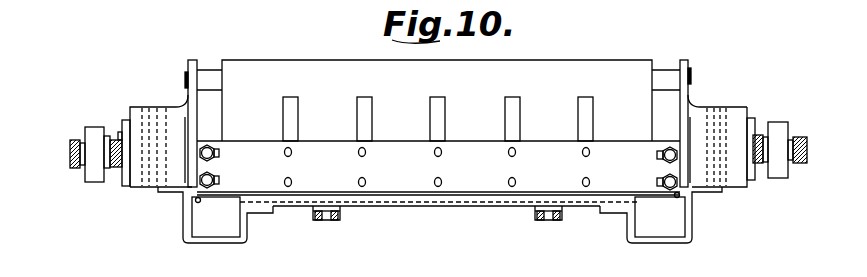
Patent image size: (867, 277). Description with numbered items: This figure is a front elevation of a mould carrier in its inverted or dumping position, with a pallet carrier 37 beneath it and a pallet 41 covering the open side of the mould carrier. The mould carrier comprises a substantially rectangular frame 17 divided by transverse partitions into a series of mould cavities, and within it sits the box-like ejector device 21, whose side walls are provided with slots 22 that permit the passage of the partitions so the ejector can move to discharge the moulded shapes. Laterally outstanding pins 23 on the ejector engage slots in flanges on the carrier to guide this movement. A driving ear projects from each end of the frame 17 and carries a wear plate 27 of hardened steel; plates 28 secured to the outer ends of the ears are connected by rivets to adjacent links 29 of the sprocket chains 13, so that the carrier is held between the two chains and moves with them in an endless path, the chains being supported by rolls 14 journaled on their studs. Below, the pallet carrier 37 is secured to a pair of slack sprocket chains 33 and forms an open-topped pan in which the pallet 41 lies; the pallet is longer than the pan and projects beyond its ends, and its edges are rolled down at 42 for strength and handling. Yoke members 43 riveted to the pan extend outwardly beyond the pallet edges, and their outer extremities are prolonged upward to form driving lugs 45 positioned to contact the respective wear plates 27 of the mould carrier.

The sprocket chains 13 is at (75, 142).
The rolls 14 is at (95, 167).
The mould carrier frame 17 is at (417, 173).
The ejector device 21 is at (549, 59).
The slots 22 is at (296, 106).
The pins 23 is at (211, 76).
The wear plate 27 is at (145, 123).
The plates 28 is at (125, 171).
The links 29 is at (118, 140).
The sprocket chains 33 is at (340, 220).
The pallet carrier 37 is at (442, 203).
The pallet 41 is at (198, 228).
The rolled-down edges 42 is at (196, 198).
The yoke members 43 is at (197, 246).
The driving lugs 45 is at (187, 182).